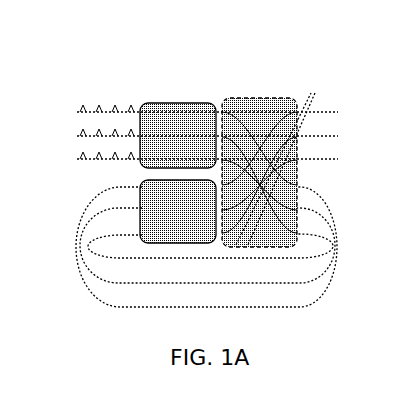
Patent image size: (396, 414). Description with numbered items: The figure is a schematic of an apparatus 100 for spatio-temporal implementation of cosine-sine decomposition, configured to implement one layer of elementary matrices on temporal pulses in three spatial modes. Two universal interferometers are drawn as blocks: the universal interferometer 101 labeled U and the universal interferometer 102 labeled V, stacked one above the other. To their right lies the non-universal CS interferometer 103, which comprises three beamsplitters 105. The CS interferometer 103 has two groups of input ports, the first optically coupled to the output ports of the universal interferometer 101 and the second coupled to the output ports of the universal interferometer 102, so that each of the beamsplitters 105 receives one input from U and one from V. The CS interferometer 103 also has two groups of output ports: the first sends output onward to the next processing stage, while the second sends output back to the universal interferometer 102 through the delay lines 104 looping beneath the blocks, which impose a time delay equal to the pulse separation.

The apparatus 100 is at (65, 42).
The universal interferometer 101 is at (173, 100).
The universal interferometer 102 is at (140, 180).
The CS interferometer 103 is at (255, 97).
The delay lines 104 is at (113, 288).
The beamsplitters 105 is at (296, 153).